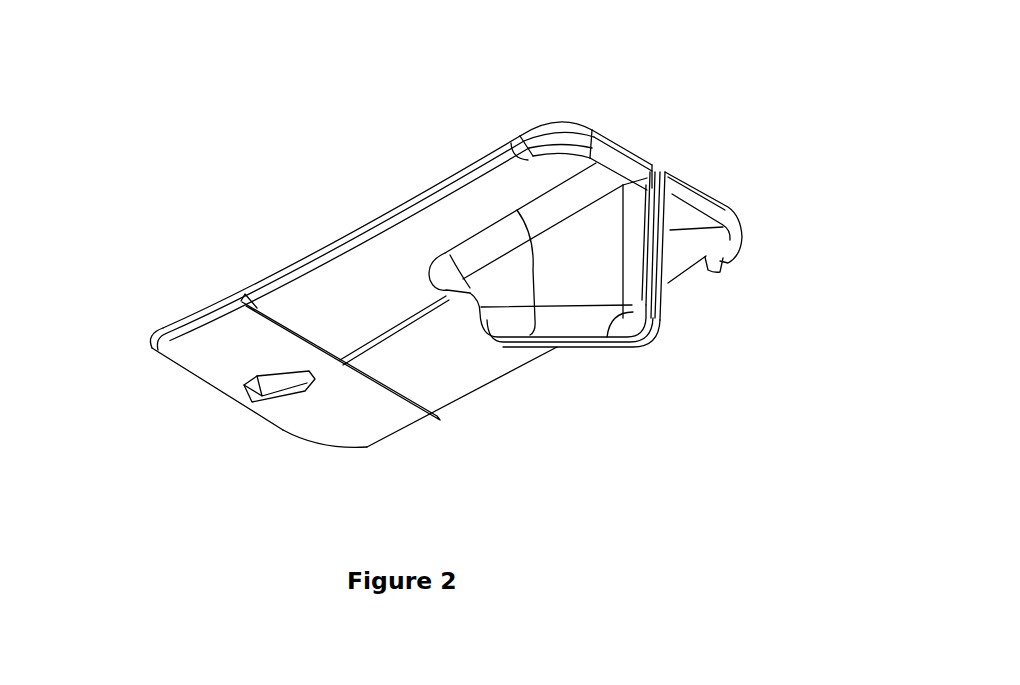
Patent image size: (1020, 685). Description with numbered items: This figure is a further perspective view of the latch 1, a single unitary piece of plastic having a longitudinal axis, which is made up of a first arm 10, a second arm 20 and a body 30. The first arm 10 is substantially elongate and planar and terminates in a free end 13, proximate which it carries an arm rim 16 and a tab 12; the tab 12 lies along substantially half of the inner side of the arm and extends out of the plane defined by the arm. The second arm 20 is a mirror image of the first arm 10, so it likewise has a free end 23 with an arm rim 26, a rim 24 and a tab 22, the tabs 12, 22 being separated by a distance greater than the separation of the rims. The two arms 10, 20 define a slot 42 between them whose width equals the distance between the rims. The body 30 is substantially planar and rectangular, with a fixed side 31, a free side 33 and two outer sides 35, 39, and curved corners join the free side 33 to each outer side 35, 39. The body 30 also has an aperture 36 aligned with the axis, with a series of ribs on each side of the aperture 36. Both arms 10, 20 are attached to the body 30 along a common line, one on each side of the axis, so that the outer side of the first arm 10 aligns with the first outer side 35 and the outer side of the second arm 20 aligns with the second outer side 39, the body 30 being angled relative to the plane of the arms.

The latch 1 is at (690, 93).
The first arm 10 is at (733, 223).
The tab 12 is at (660, 297).
The free end 13 is at (727, 213).
The arm rim 16 is at (692, 192).
The second arm 20 is at (357, 275).
The tab 22 is at (577, 273).
The free end 23 is at (560, 125).
The rim 24 is at (607, 343).
The arm rim 26 is at (600, 128).
The body 30 is at (207, 367).
The fixed side 31 is at (260, 313).
The free side 33 is at (283, 433).
The first outer side 35 is at (383, 440).
The aperture 36 is at (253, 404).
The second outer side 39 is at (190, 313).
The slot 42 is at (428, 307).